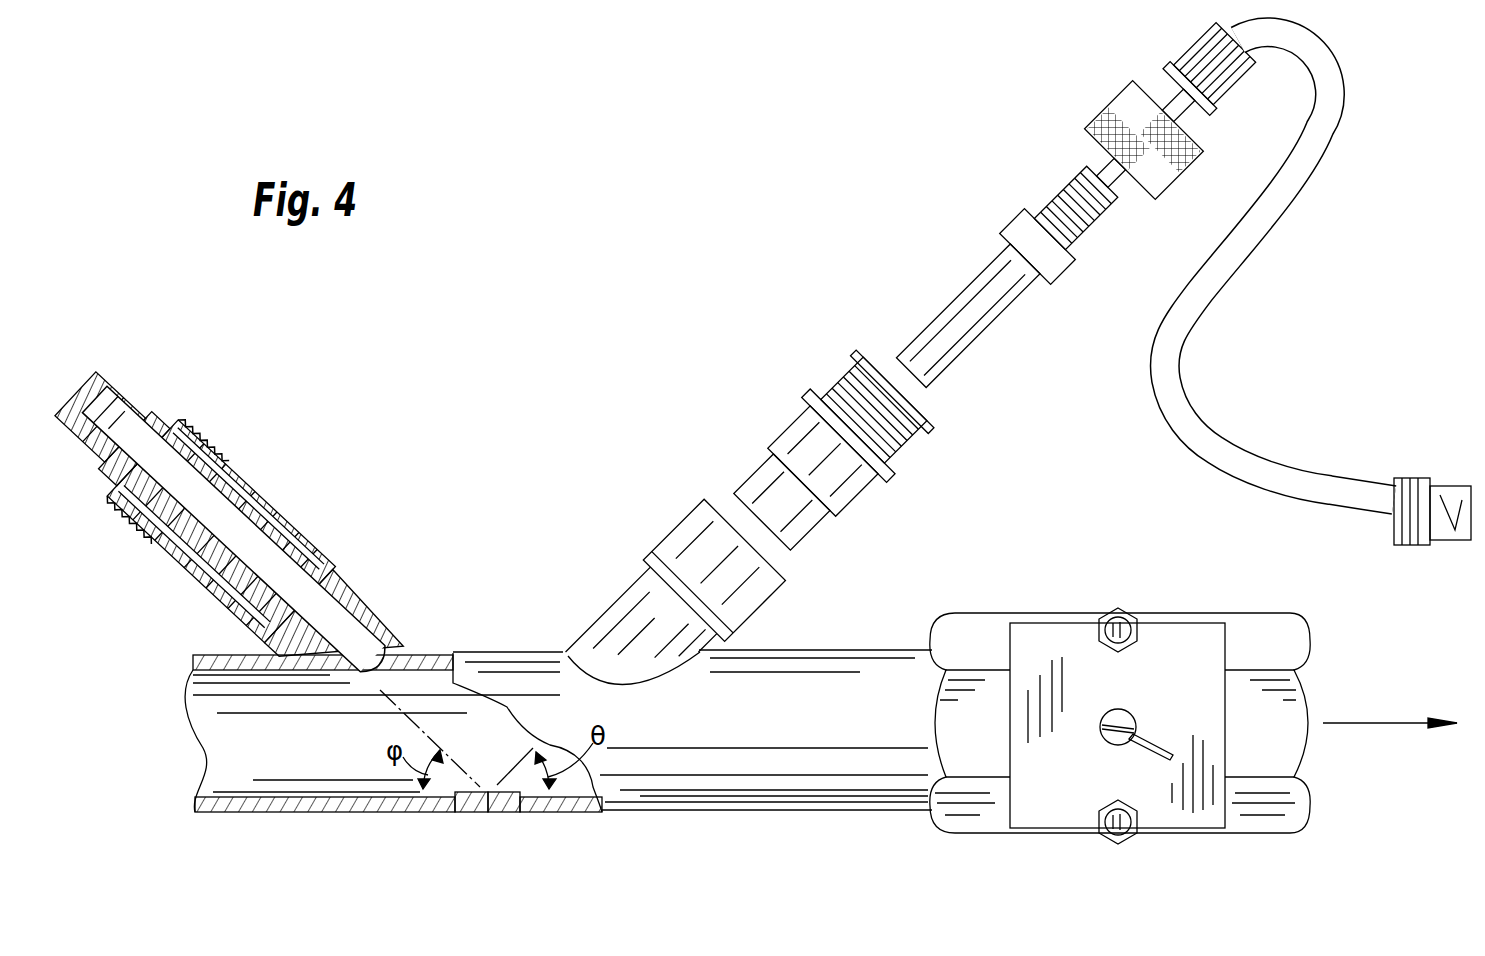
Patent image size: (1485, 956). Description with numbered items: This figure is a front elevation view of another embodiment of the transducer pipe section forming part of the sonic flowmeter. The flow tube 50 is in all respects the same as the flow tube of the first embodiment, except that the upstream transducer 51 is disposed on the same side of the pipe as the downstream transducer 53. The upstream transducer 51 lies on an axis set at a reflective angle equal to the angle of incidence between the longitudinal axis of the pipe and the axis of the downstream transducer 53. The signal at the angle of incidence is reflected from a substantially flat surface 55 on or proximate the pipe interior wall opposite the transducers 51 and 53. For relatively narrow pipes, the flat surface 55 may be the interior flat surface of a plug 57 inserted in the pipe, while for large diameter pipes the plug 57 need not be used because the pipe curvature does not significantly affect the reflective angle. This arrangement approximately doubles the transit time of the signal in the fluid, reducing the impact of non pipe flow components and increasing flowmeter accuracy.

The flow tube 50 is at (682, 815).
The upstream transducer 51 is at (200, 522).
The downstream transducer 53 is at (988, 320).
The flat surface 55 is at (472, 802).
The plug 57 is at (507, 802).